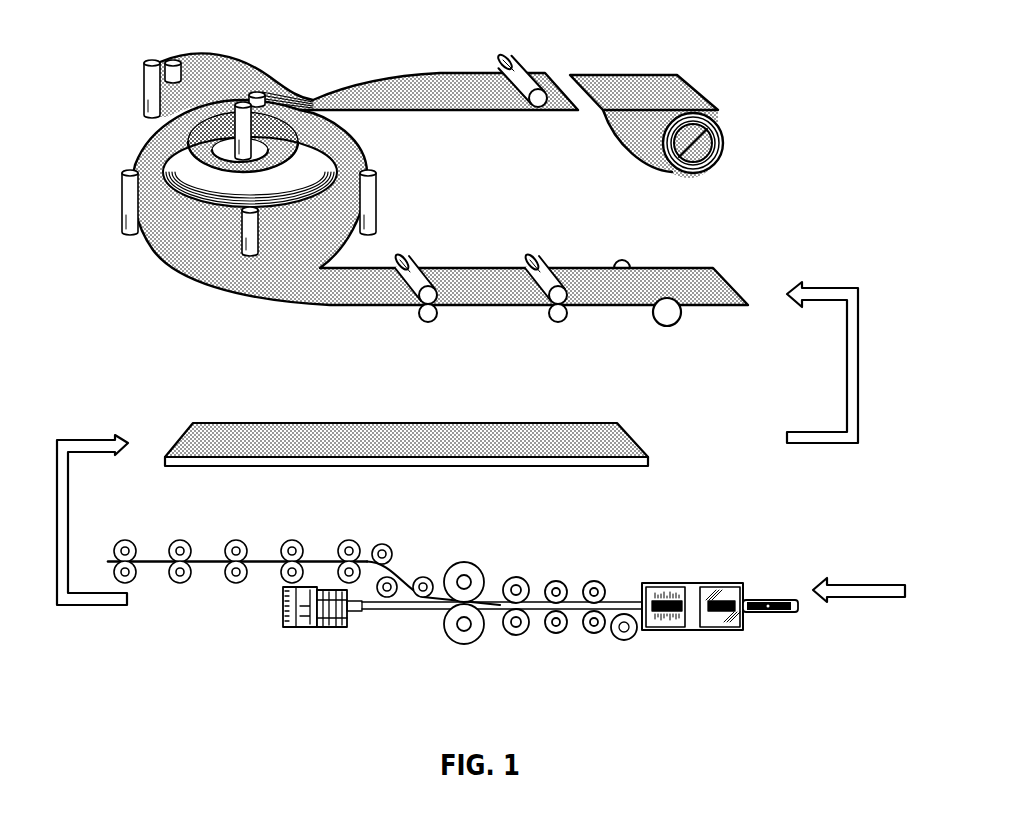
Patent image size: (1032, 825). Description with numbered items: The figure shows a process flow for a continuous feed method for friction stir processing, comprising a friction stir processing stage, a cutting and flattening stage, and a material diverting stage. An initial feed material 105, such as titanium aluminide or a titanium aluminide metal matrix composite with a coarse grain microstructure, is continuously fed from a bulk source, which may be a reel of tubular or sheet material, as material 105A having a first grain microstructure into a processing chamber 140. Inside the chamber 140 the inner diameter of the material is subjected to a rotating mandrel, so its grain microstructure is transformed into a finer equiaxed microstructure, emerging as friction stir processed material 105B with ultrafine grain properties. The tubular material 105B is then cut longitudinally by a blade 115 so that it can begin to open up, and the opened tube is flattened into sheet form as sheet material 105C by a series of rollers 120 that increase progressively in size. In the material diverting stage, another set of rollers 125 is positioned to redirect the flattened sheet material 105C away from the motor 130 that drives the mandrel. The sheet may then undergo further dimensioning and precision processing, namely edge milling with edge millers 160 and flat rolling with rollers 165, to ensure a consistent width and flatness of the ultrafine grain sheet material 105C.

The material 105 is at (795, 614).
The material having a first grain microstructure 105A is at (757, 600).
The friction stir processed material 105B is at (625, 601).
The sheet material 105C is at (538, 70).
The blade 115 is at (623, 641).
The rollers 120 is at (511, 576).
The rollers 125 is at (236, 539).
The motor 130 is at (271, 631).
The processing chamber 140 is at (678, 576).
The edge millers 160 is at (667, 297).
The rollers 165 is at (143, 85).